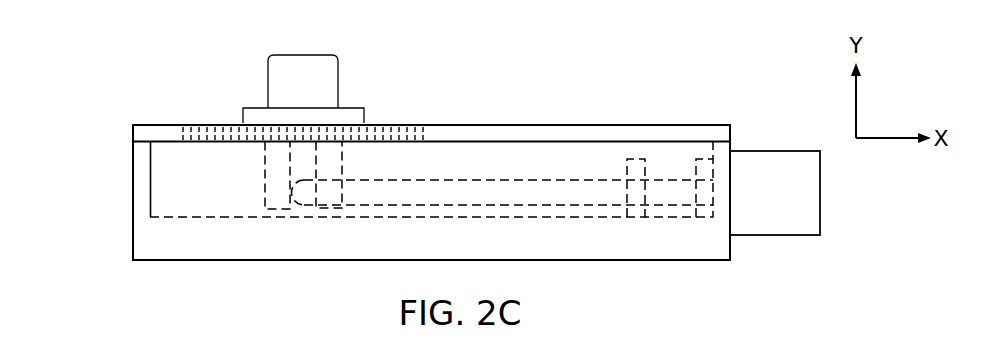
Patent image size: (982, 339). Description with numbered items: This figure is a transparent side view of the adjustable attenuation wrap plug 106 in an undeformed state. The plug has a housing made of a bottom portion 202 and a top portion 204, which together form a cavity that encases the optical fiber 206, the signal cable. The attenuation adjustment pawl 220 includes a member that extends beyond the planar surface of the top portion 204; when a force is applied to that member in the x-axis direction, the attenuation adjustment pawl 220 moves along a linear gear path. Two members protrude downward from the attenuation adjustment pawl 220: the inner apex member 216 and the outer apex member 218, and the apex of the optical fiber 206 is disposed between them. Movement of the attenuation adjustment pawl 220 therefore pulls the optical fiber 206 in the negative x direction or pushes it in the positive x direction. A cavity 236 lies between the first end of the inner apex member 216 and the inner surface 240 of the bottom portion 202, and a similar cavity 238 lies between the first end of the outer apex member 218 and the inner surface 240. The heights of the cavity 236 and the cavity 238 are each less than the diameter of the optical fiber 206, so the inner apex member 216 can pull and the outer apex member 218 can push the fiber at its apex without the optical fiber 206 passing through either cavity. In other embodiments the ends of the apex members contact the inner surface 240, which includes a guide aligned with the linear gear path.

The adjustable attenuation wrap plug 106 is at (138, 48).
The bottom portion 202 is at (133, 198).
The top portion 204 is at (143, 135).
The optical fiber 206 is at (457, 190).
The inner apex member 216 is at (335, 160).
The outer apex member 218 is at (277, 162).
The attenuation adjustment pawl 220 is at (303, 89).
The cavity 236 is at (330, 212).
The cavity 238 is at (276, 213).
The inner surface 240 is at (206, 217).